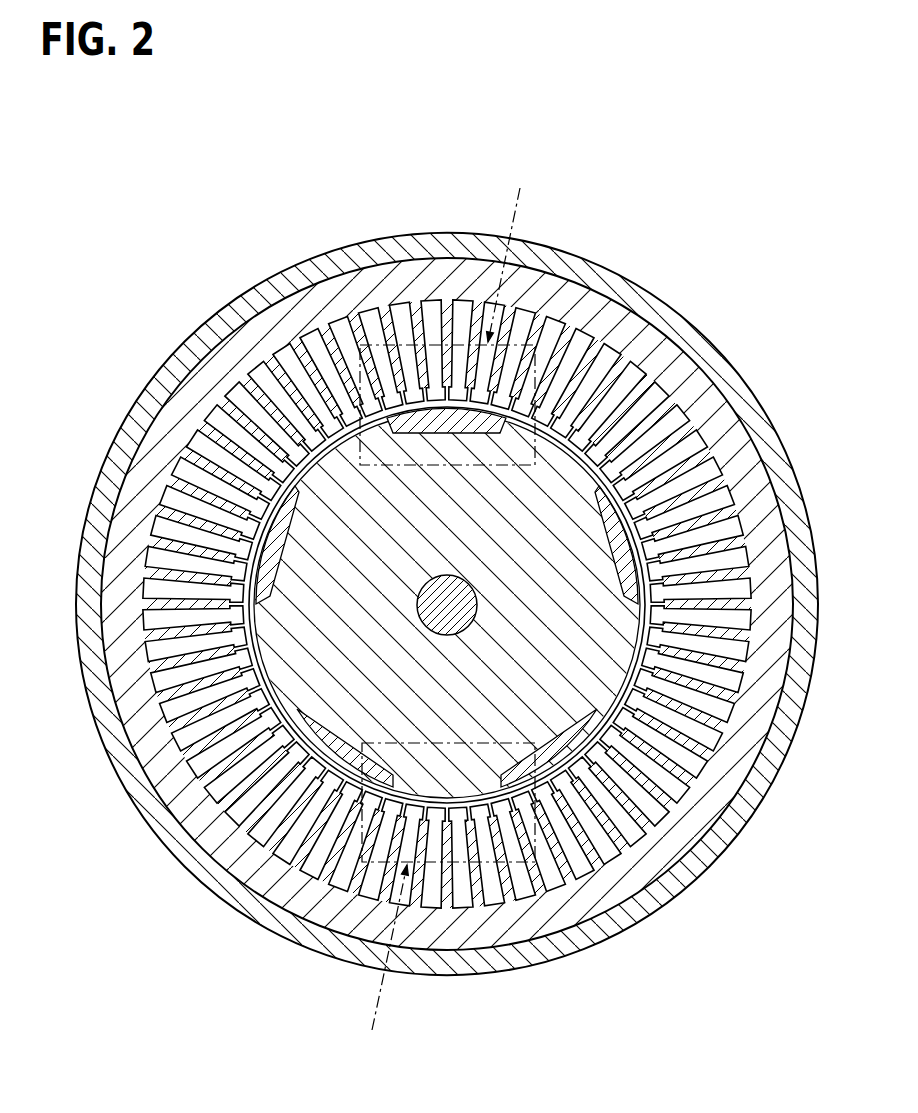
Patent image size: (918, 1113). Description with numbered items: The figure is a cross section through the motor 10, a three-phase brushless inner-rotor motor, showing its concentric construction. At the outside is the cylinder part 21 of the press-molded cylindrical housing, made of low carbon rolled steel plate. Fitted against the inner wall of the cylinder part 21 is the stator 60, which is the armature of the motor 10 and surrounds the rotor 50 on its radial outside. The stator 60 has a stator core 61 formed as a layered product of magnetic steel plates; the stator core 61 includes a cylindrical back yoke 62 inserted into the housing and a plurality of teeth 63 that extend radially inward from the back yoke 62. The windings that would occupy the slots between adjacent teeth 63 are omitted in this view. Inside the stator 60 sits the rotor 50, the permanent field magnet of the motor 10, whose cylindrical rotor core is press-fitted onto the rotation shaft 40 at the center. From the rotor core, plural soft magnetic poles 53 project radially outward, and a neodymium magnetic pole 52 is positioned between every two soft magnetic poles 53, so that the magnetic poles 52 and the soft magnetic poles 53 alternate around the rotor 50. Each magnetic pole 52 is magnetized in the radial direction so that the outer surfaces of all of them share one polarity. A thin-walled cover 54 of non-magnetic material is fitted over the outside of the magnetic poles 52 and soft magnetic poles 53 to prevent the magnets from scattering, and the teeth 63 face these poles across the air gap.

The motor 10 is at (437, 609).
The cylinder part 21 is at (724, 352).
The rotation shaft 40 is at (465, 615).
The rotor 50 is at (443, 606).
The magnetic pole 52 is at (487, 420).
The soft magnetic pole 53 is at (337, 450).
The thin-walled cover 54 is at (268, 712).
The stator 60 is at (405, 604).
The stator core 61 is at (411, 604).
The back yoke 62 is at (178, 427).
The teeth 63 is at (392, 322).